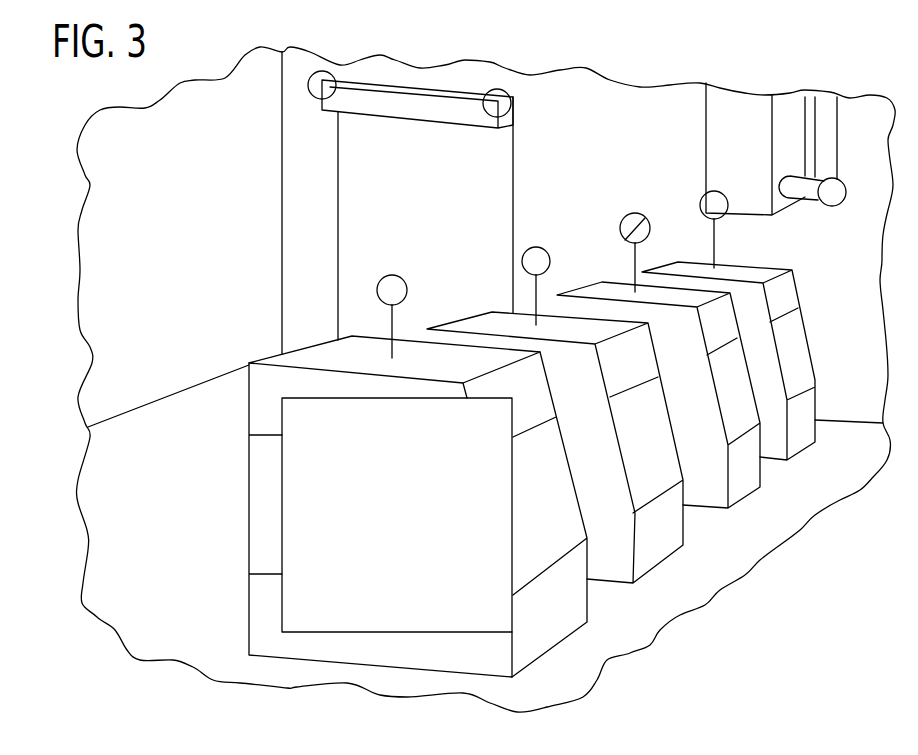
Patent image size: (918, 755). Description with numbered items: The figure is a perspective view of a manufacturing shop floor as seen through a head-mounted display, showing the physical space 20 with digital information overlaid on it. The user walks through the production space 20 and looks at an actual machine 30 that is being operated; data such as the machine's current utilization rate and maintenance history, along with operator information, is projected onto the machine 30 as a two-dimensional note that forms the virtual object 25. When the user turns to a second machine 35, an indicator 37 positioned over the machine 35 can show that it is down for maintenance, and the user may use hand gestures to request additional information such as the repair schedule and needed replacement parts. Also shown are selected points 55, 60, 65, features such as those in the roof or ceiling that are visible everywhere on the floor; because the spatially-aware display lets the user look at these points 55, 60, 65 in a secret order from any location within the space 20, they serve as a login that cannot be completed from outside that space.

The physical space 20 is at (117, 550).
The virtual object 25 is at (392, 275).
The machine 30 is at (547, 613).
The second machine 35 is at (743, 468).
The indicator 37 is at (635, 213).
The selected point 55 is at (322, 72).
The selected point 60 is at (497, 90).
The selected point 65 is at (834, 206).